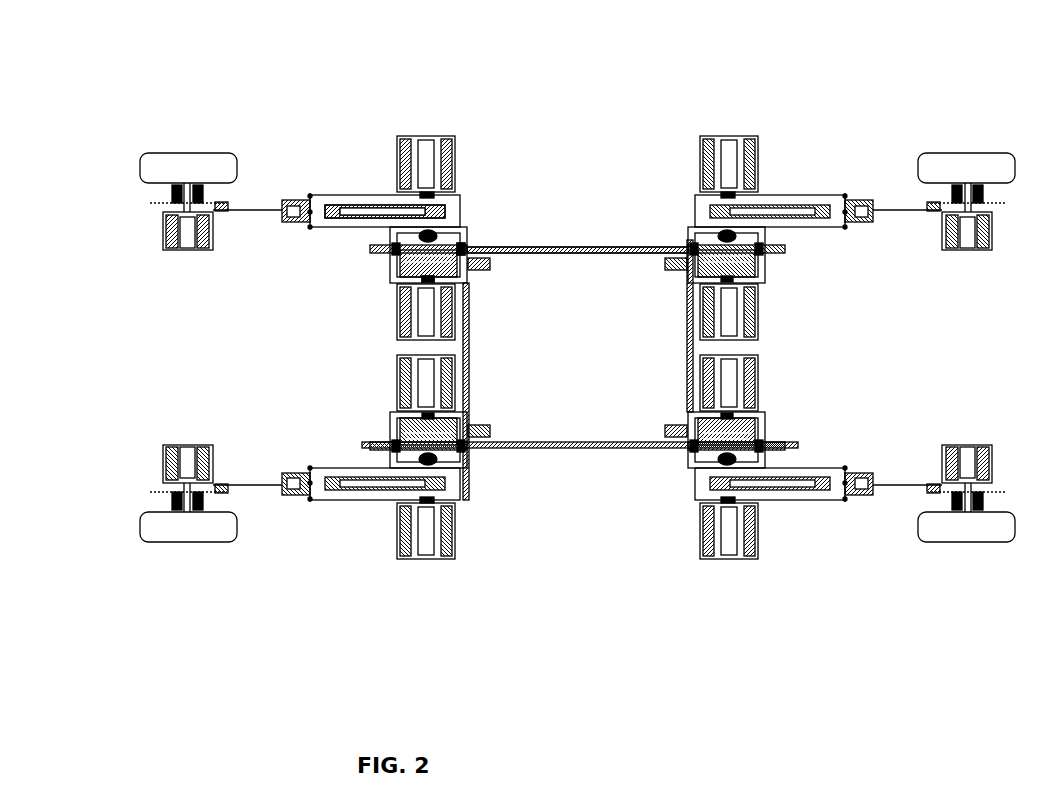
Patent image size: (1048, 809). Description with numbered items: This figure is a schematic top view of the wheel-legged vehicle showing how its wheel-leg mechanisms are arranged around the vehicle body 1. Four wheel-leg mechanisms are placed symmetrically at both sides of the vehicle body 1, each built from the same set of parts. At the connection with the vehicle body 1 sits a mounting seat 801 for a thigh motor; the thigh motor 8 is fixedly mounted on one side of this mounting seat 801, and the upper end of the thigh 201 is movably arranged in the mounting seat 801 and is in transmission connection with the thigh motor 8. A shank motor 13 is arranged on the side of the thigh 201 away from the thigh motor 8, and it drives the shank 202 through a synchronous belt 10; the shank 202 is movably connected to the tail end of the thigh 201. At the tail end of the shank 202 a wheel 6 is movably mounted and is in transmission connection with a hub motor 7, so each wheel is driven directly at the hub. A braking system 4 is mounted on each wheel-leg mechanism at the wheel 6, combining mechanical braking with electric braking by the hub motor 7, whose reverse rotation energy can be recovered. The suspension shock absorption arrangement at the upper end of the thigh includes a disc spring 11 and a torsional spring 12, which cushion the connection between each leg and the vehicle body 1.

The vehicle body 1 is at (578, 247).
The braking system 4 is at (225, 202).
The wheel 6 is at (158, 165).
The hub motor 7 is at (203, 252).
The thigh motor 8 is at (398, 305).
The mounting seat 801 is at (462, 280).
The synchronous belt 10 is at (335, 198).
The disc spring 11 is at (432, 150).
The torsional spring 12 is at (465, 245).
The shank motor 13 is at (427, 195).
The thigh 201 is at (387, 197).
The shank 202 is at (270, 208).